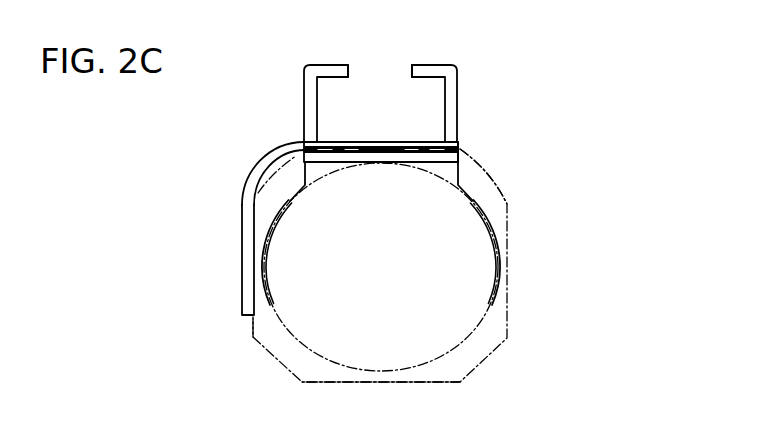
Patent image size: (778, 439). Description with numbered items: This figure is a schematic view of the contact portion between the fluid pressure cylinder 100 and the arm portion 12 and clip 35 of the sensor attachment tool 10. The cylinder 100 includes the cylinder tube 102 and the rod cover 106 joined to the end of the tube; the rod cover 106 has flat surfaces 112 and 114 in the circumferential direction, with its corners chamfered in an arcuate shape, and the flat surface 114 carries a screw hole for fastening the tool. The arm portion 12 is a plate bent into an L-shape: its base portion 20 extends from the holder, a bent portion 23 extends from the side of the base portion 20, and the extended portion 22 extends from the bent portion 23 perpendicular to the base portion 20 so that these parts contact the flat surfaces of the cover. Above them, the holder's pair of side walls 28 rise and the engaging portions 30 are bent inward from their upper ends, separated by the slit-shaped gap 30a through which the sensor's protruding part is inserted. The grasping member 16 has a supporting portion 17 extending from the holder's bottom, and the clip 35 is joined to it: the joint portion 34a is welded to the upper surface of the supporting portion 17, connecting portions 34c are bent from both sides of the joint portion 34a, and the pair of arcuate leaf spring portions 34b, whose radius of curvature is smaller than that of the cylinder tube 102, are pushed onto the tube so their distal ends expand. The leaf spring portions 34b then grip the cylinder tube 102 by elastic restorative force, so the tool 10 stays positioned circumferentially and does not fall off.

The sensor attachment tool 10 is at (382, 162).
The arm portion 12 is at (239, 173).
The grasping member 16 is at (504, 252).
The supporting portion 17 is at (463, 150).
The base portion 20 is at (307, 141).
The extended portion 22 is at (241, 234).
The bent portion 23 is at (263, 163).
The side walls 28 is at (303, 90).
The engaging portions 30 is at (326, 64).
The slit-shaped gap 30a is at (410, 73).
The joint portion 34a is at (366, 147).
The leaf spring portions 34b is at (283, 211).
The connecting portions 34c is at (459, 173).
The clip 35 is at (491, 207).
The fluid pressure cylinder 100 is at (515, 291).
The cylinder tube 102 is at (436, 360).
The rod cover 106 is at (373, 384).
The flat surface 112 is at (422, 141).
The flat surface 114 is at (251, 318).